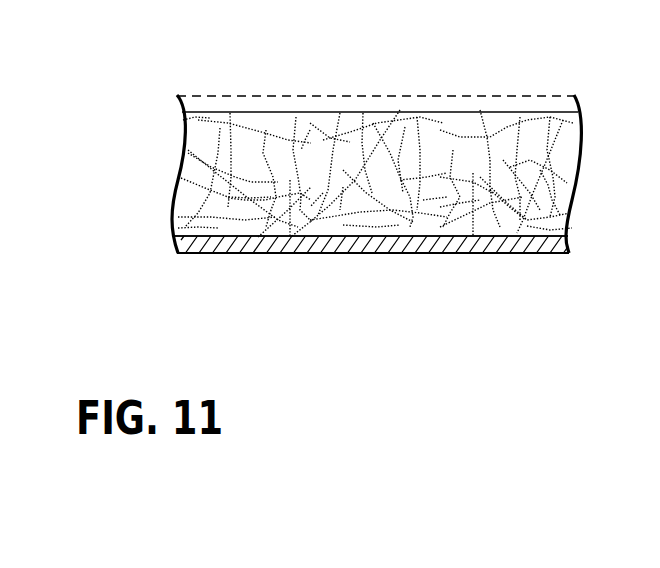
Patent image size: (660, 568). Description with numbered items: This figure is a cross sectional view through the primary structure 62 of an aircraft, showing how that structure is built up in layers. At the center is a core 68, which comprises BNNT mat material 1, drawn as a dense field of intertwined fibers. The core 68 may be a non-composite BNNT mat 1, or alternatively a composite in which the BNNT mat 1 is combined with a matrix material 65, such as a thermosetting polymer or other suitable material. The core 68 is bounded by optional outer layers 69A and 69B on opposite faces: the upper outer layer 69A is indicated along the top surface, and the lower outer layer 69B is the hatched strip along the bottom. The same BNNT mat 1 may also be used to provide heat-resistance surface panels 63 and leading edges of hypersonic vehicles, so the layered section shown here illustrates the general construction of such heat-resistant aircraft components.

The BNNT mat material 1 is at (531, 181).
The primary structure 62 is at (405, 254).
The heat-resistance surface panels 63 is at (330, 286).
The matrix material 65 is at (462, 152).
The core 68 is at (558, 160).
The outer layer 69A is at (359, 96).
The outer layer 69B is at (523, 255).